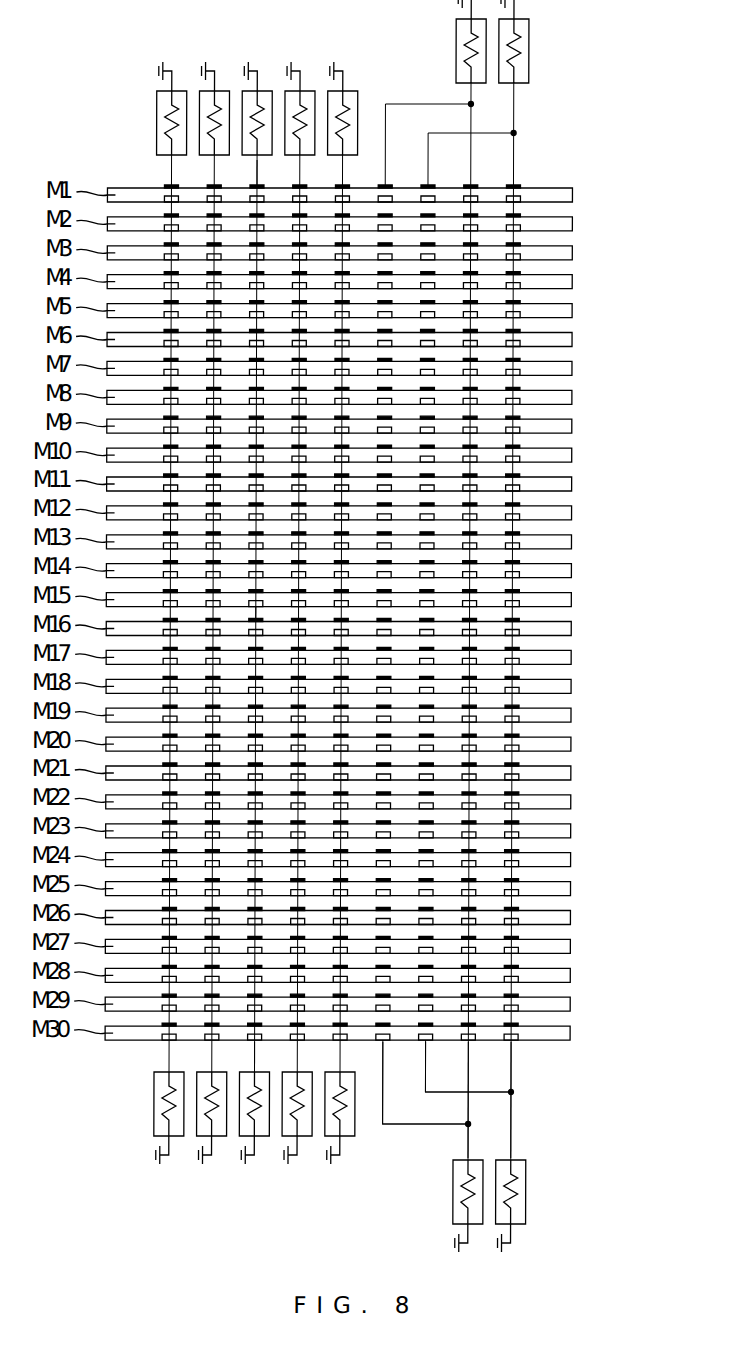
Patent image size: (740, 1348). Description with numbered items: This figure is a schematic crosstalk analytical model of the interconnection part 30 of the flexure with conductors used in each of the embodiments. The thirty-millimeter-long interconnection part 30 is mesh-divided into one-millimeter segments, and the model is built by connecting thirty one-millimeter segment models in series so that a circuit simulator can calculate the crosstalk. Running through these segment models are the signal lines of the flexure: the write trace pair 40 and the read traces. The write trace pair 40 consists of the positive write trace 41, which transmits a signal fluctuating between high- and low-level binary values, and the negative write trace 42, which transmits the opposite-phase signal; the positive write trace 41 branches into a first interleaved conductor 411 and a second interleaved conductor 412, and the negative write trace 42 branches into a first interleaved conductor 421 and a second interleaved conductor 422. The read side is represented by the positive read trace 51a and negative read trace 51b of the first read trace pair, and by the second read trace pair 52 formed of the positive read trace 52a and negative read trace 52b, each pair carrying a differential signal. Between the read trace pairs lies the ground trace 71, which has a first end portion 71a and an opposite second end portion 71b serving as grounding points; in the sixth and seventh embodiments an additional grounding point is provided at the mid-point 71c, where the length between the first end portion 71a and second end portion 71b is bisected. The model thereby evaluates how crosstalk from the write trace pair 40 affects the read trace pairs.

The interconnection part 30 is at (582, 168).
The write trace pair 40 is at (504, 1147).
The positive write trace 41 is at (514, 1152).
The negative write trace 42 is at (471, 1137).
The first interleaved conductor 411 is at (428, 1056).
The second interleaved conductor 412 is at (513, 1046).
The first interleaved conductor 421 is at (470, 1046).
The second interleaved conductor 422 is at (384, 1088).
The positive read trace 51a is at (302, 1153).
The negative read trace 51b is at (344, 1153).
The second read trace pair 52 is at (253, 1167).
The positive read trace 52a is at (218, 1153).
The negative read trace 52b is at (175, 1153).
The ground trace 71 is at (259, 1148).
The first end portion 71a is at (258, 175).
The second end portion 71b is at (258, 1055).
The mid-point 71c is at (258, 613).